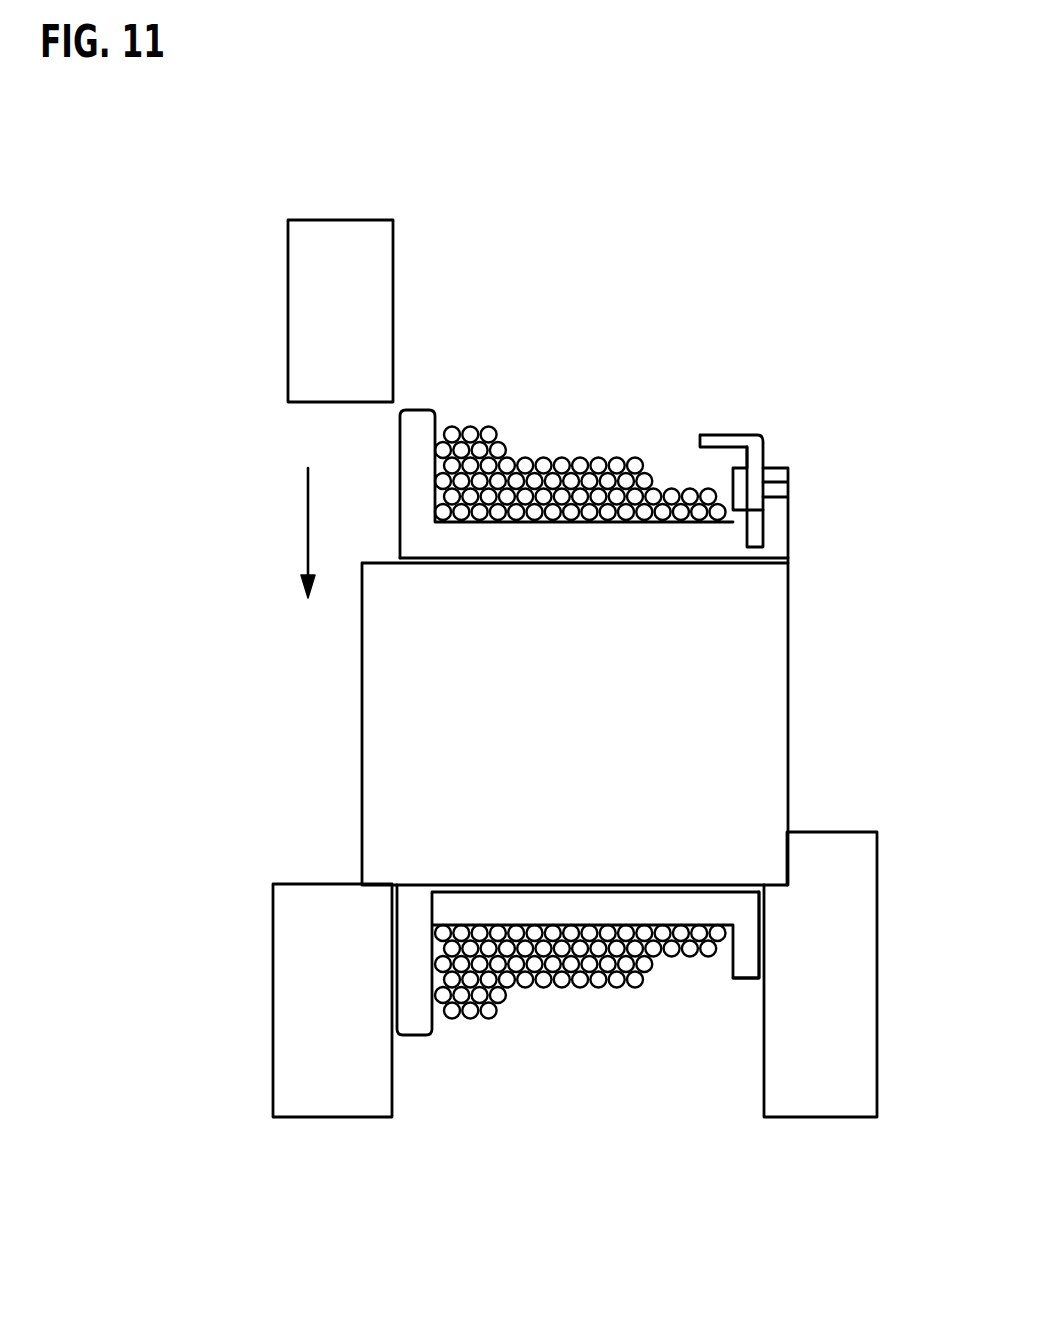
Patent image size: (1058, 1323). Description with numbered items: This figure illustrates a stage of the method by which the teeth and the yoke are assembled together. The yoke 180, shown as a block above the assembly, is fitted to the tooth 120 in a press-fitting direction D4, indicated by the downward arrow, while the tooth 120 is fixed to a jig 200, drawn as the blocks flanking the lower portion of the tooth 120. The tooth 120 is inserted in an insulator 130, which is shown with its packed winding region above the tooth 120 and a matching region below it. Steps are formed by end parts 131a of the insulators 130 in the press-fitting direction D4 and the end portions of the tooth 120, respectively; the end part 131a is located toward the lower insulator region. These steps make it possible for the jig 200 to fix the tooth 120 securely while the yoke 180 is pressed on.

The yoke 180 is at (312, 291).
The press-fitting direction D4 is at (308, 530).
The insulator 130 is at (681, 540).
The tooth 120 is at (767, 658).
The end part of inner flange 131a is at (747, 966).
The jig 200 is at (792, 1087).